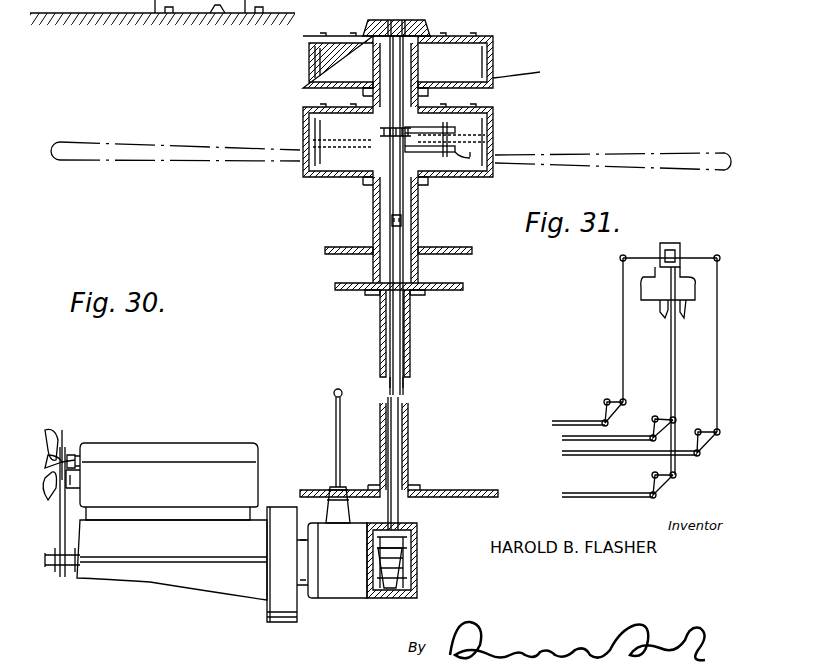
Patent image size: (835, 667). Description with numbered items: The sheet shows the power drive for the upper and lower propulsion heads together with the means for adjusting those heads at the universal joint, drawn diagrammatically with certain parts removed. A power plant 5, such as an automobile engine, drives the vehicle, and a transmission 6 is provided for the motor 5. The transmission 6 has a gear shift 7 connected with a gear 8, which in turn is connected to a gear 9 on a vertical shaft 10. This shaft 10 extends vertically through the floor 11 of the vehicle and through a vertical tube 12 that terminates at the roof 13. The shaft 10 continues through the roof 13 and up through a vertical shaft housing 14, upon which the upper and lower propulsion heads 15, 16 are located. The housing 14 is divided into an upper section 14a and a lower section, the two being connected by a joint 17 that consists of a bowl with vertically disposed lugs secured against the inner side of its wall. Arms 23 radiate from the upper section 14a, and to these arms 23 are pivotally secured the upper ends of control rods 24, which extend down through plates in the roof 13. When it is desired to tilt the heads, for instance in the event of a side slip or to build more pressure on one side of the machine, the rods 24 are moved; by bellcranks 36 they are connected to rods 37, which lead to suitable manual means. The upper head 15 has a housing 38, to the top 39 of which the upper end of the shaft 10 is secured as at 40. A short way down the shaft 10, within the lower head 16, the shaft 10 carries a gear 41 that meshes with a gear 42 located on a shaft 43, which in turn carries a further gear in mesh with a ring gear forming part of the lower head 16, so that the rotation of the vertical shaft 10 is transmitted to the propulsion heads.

In FIG. 30, the power plant 5 is at (185, 472).
In FIG. 30, the transmission 6 is at (324, 252).
In FIG. 30, the gear shift 7 is at (336, 462).
In FIG. 30, the gear 8 is at (388, 588).
In FIG. 30, the gear 9 is at (416, 540).
In FIG. 30, the vertical shaft 10 is at (395, 462).
In FIG. 30, the floor 11 is at (490, 490).
In FIG. 30, the vertical tube 12 is at (380, 352).
In FIG. 30, the roof 13 is at (446, 248).
In FIG. 30, the vertical shaft housing 14 is at (418, 220).
In FIG. 31, the upper section 14a is at (673, 242).
In FIG. 30, the upper propulsion head 15 is at (504, 66).
In FIG. 30, the lower propulsion head 16 is at (504, 133).
In FIG. 31, the joint 17 is at (653, 311).
In FIG. 31, the arms 23 is at (636, 257).
In FIG. 31, the control rods 24 is at (622, 317).
In FIG. 31, the bellcranks 36 is at (612, 400).
In FIG. 31, the rods 37 is at (558, 420).
In FIG. 30, the housing 38 is at (527, 72).
In FIG. 30, the top 39 is at (427, 28).
In FIG. 30, the securing point 40 is at (398, 34).
In FIG. 30, the gear 41 is at (388, 132).
In FIG. 30, the gear 42 is at (455, 130).
In FIG. 30, the shaft 43 is at (460, 160).